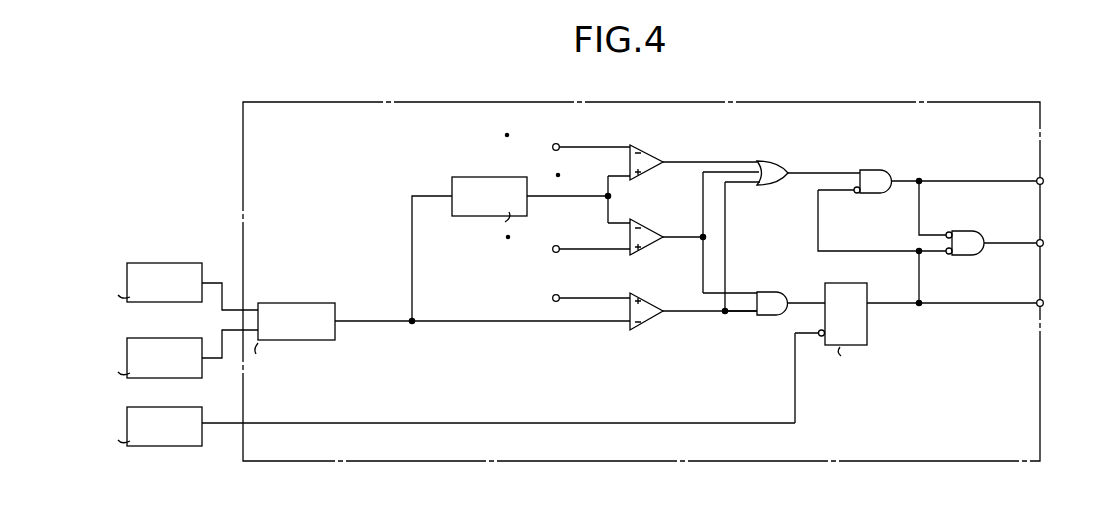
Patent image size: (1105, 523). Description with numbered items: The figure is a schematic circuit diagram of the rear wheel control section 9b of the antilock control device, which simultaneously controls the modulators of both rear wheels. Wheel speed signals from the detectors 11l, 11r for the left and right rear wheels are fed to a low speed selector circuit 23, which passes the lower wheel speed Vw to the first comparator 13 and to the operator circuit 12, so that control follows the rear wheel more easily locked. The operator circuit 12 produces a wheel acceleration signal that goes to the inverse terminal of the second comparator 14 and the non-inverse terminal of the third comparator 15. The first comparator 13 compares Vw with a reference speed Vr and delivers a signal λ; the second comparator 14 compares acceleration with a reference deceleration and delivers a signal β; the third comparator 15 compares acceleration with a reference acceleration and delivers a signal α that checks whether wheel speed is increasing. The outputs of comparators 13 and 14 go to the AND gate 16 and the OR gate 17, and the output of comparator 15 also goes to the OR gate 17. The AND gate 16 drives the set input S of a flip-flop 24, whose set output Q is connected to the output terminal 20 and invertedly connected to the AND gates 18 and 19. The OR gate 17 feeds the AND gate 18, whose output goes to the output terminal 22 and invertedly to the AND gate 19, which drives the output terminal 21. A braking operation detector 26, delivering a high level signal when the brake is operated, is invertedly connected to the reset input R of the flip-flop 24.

The rear wheel control section 9b is at (843, 102).
The detector 11r is at (162, 269).
The detector 11l is at (162, 345).
The operator circuit 12 is at (467, 184).
The first comparator 13 is at (644, 300).
The second comparator 14 is at (644, 224).
The third comparator 15 is at (644, 150).
The AND gate 16 is at (768, 292).
The OR gate 17 is at (766, 161).
The AND gate 18 is at (870, 169).
The AND gate 19 is at (966, 232).
The output terminal 20 is at (1044, 303).
The output terminal 21 is at (1044, 243).
The output terminal 22 is at (1044, 181).
The low speed selector circuit 23 is at (298, 305).
The flip-flop 24 is at (868, 336).
The braking operation detector 26 is at (155, 444).